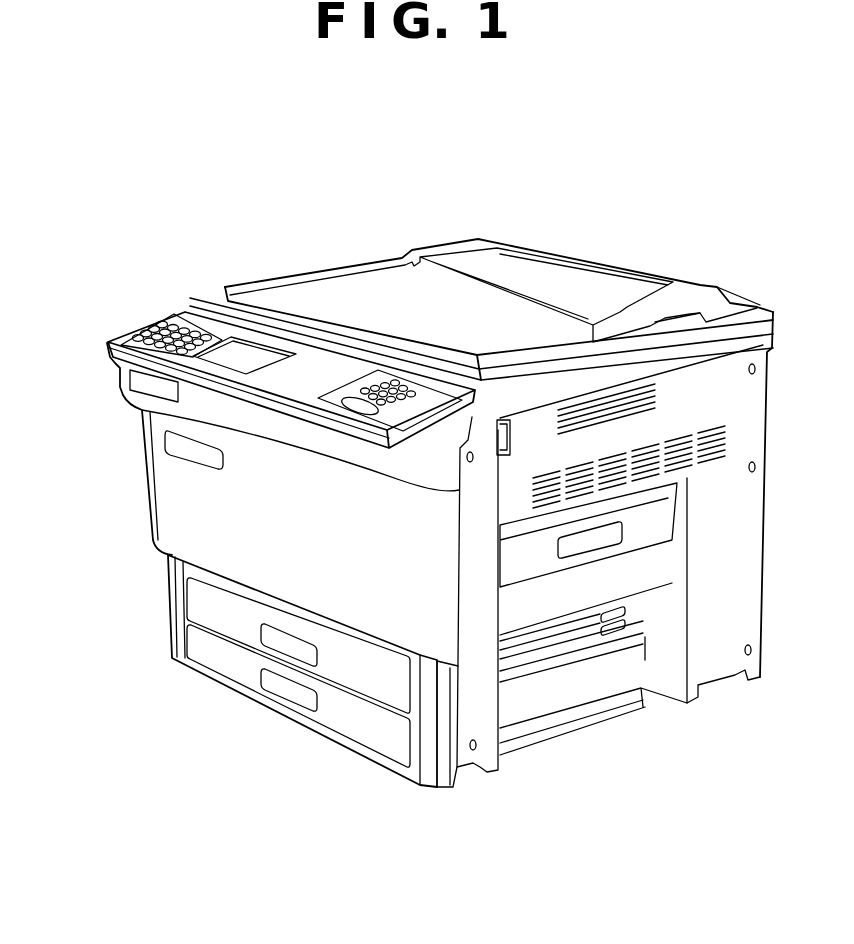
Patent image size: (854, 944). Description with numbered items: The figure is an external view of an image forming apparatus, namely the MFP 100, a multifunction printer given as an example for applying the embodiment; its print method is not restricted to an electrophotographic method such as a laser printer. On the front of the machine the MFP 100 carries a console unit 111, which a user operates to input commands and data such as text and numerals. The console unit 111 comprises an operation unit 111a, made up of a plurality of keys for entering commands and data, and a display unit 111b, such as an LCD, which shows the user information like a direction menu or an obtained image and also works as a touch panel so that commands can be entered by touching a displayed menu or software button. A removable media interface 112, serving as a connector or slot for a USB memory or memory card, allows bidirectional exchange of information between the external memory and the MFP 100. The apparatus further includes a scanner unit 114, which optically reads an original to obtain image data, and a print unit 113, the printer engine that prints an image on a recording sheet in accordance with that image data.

The MFP 100 is at (167, 181).
The console unit 111 is at (218, 343).
The operation unit 111a is at (166, 326).
The display unit 111b is at (248, 362).
The removable media interface 112 is at (153, 384).
The print unit 113 is at (262, 534).
The scanner unit 114 is at (676, 318).